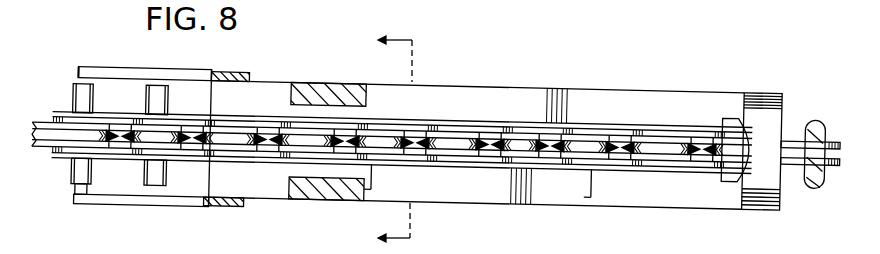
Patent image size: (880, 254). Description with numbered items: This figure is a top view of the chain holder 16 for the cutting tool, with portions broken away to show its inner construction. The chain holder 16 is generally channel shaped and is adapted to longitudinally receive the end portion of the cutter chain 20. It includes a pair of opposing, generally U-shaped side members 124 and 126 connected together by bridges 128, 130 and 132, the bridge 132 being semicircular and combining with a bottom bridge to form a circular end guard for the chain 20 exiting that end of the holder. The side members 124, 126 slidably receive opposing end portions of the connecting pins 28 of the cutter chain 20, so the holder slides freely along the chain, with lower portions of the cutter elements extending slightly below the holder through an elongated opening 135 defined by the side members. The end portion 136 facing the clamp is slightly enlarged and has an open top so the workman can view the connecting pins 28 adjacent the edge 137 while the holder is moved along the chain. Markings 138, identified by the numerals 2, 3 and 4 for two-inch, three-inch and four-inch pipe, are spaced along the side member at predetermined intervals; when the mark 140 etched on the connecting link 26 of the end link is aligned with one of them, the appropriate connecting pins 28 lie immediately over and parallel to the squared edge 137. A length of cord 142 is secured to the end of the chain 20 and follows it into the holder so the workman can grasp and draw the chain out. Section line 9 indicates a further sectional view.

The end portion 136 is at (96, 68).
The edge 137 is at (77, 79).
The bridge 128 is at (243, 84).
The connecting pins 28 is at (80, 180).
The bridge 130 is at (338, 87).
The section line 9- 9 is at (374, 138).
The side member 124 is at (462, 90).
The side member 126 is at (461, 198).
The elongated opening 135 is at (412, 136).
The chain holder 16 is at (538, 82).
The mark 4 is at (380, 176).
The mark 3 is at (599, 181).
The markings 138 is at (376, 190).
The bridge 132 is at (751, 99).
The mark 140 is at (740, 165).
The connecting links 26 is at (708, 160).
The mark 2 is at (726, 185).
The cutter chain 20 is at (797, 166).
The cord 142 is at (820, 184).